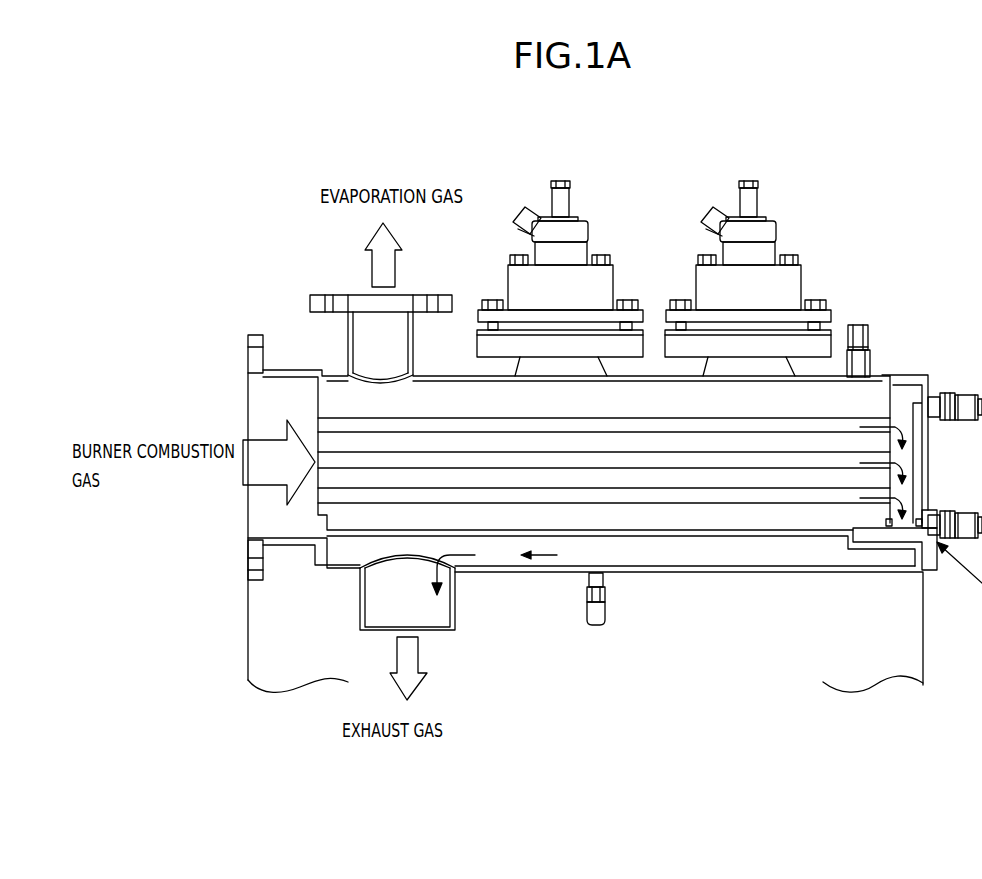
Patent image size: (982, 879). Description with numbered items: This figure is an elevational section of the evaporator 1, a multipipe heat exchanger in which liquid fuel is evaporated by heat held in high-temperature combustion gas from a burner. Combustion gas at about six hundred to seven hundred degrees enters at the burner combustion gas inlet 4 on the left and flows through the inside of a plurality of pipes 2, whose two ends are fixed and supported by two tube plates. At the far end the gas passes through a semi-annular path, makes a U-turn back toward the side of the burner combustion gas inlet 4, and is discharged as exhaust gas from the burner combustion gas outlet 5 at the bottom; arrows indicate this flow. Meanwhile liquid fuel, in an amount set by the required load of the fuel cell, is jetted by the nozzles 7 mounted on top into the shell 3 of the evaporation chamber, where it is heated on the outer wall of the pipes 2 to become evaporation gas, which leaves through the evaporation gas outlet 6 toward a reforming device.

The evaporator 1 is at (719, 596).
The pipe 2 is at (493, 493).
The shell 3 is at (830, 387).
The burner combustion gas inlet 4 is at (267, 362).
The burner combustion gas outlet 5 is at (457, 605).
The evaporation gas outlet 6 is at (340, 304).
The nozzle 7 is at (747, 183).